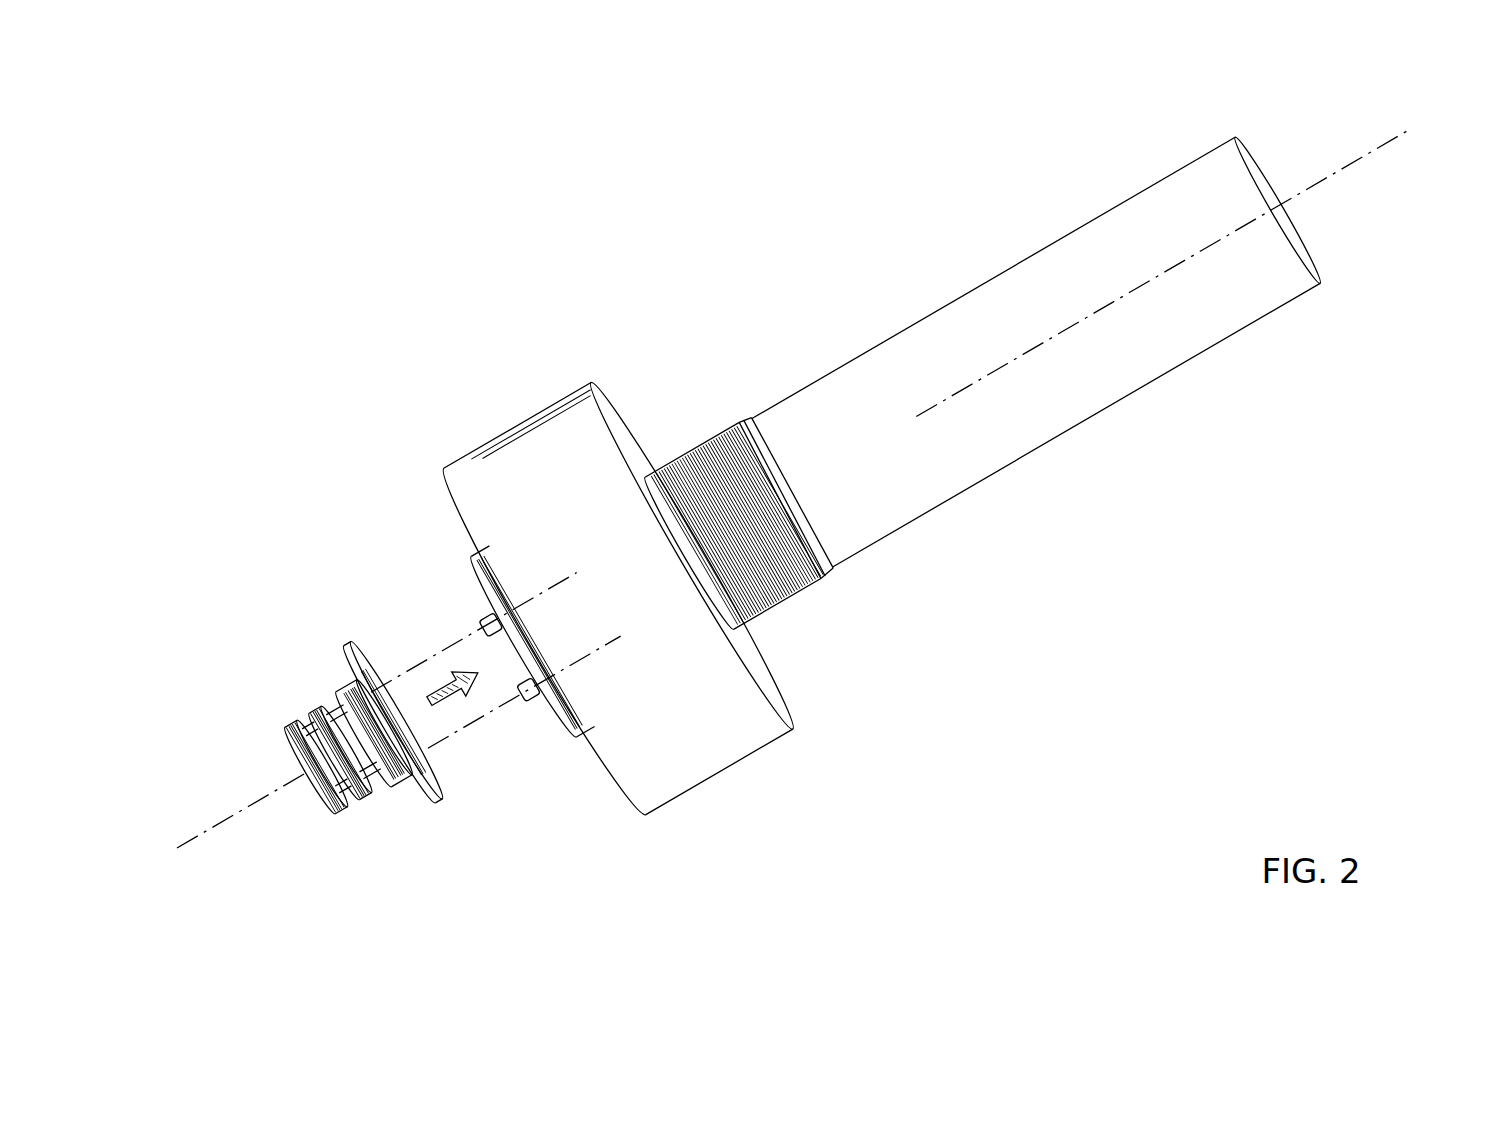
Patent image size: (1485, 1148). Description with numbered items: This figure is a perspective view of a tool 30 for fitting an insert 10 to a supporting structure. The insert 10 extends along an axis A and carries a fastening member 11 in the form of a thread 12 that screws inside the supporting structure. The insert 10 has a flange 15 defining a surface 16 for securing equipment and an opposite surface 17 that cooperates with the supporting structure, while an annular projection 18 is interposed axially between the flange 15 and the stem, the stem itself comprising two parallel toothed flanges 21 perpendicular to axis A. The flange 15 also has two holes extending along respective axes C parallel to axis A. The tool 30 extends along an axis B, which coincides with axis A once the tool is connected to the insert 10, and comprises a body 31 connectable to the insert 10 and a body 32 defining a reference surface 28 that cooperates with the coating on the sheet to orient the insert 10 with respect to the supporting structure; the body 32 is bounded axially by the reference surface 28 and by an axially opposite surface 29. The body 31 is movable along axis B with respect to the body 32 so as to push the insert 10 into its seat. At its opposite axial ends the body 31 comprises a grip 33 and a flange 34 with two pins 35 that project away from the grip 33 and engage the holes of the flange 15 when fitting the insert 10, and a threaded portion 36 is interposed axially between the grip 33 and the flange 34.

The insert 10 is at (398, 797).
The fastening member 11 is at (327, 713).
The thread 12 is at (345, 672).
The flange 15 is at (364, 626).
The surface 16 is at (357, 636).
The surface 17 is at (422, 792).
The annular projection 18 is at (332, 695).
The toothed flanges 21 is at (366, 800).
The reference surface 28 is at (612, 782).
The surface 29 is at (778, 688).
The tool 30 is at (855, 501).
The body 31 is at (1125, 368).
The body 32 is at (495, 492).
The grip 33 is at (1122, 232).
The flange 34 is at (566, 742).
The pins 35 is at (480, 620).
The threaded portion 36 is at (820, 590).
The axis A is at (185, 833).
The axis B is at (1413, 138).
The axes C is at (578, 580).